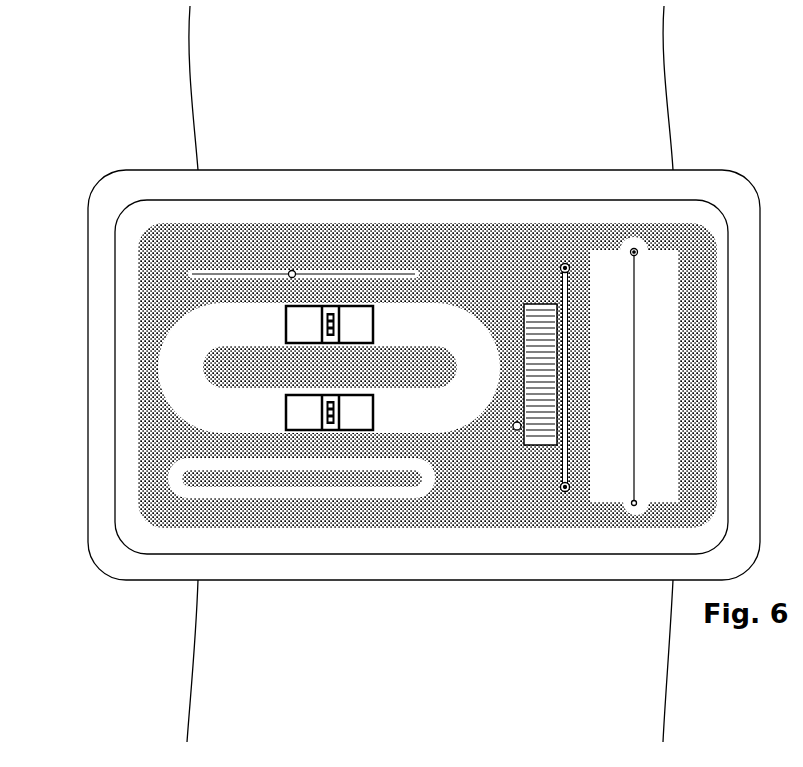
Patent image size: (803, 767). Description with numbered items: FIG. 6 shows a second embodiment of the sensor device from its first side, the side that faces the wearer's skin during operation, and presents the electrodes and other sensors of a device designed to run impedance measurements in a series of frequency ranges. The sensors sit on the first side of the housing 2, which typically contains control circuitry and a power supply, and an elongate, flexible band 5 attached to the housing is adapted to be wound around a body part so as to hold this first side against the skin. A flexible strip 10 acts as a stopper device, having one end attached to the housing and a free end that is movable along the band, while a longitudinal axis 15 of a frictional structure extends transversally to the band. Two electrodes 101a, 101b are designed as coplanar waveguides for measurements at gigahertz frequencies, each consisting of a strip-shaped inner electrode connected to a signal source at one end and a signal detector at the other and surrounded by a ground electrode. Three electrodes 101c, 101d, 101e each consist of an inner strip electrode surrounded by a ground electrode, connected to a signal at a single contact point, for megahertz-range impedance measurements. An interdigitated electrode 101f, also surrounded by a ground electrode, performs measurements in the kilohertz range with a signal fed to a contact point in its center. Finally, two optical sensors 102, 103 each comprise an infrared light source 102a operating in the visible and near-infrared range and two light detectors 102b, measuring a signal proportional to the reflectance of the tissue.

The housing 2 is at (720, 170).
The band 5 is at (190, 97).
The flexible strip 10 is at (447, 554).
The longitudinal axis 15 is at (312, 493).
The electrode 101a is at (634, 473).
The electrode 101b is at (566, 490).
The electrode 101c is at (222, 362).
The electrode 101d is at (188, 478).
The electrode 101e is at (192, 272).
The interdigitated electrode 101f is at (514, 296).
The optical sensor 102 is at (259, 537).
The infrared light source 102a is at (332, 436).
The light detectors 102b is at (303, 418).
The optical sensor 103 is at (290, 324).